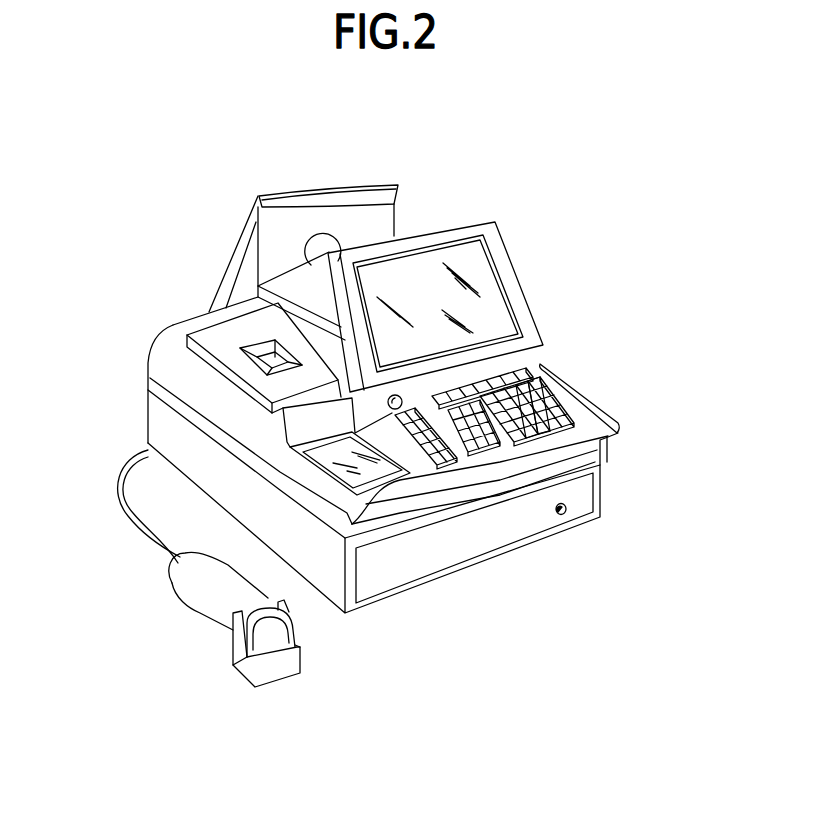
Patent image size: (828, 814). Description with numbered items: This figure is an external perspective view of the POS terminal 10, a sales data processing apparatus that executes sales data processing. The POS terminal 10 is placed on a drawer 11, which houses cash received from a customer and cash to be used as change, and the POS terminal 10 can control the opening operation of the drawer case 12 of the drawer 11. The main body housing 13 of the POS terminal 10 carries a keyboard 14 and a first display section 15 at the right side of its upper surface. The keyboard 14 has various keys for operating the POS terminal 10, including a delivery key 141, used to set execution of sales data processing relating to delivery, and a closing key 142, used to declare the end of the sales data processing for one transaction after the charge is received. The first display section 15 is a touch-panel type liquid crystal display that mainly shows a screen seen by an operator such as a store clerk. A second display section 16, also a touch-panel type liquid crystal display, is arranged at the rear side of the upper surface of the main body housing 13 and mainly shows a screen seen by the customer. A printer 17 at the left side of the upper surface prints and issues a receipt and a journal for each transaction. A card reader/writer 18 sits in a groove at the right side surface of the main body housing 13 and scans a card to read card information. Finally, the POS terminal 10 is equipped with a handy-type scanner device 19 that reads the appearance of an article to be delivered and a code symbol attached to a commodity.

The POS terminal 10 is at (466, 118).
The drawer 11 is at (313, 572).
The drawer case 12 is at (492, 550).
The main body housing 13 is at (158, 357).
The keyboard 14 is at (460, 411).
The delivery key 141 is at (520, 408).
The closing key 142 is at (537, 404).
The first display section 15 is at (478, 264).
The second display section 16 is at (252, 225).
The printer 17 is at (250, 348).
The card reader/writer 18 is at (600, 422).
The scanner device 19 is at (192, 601).